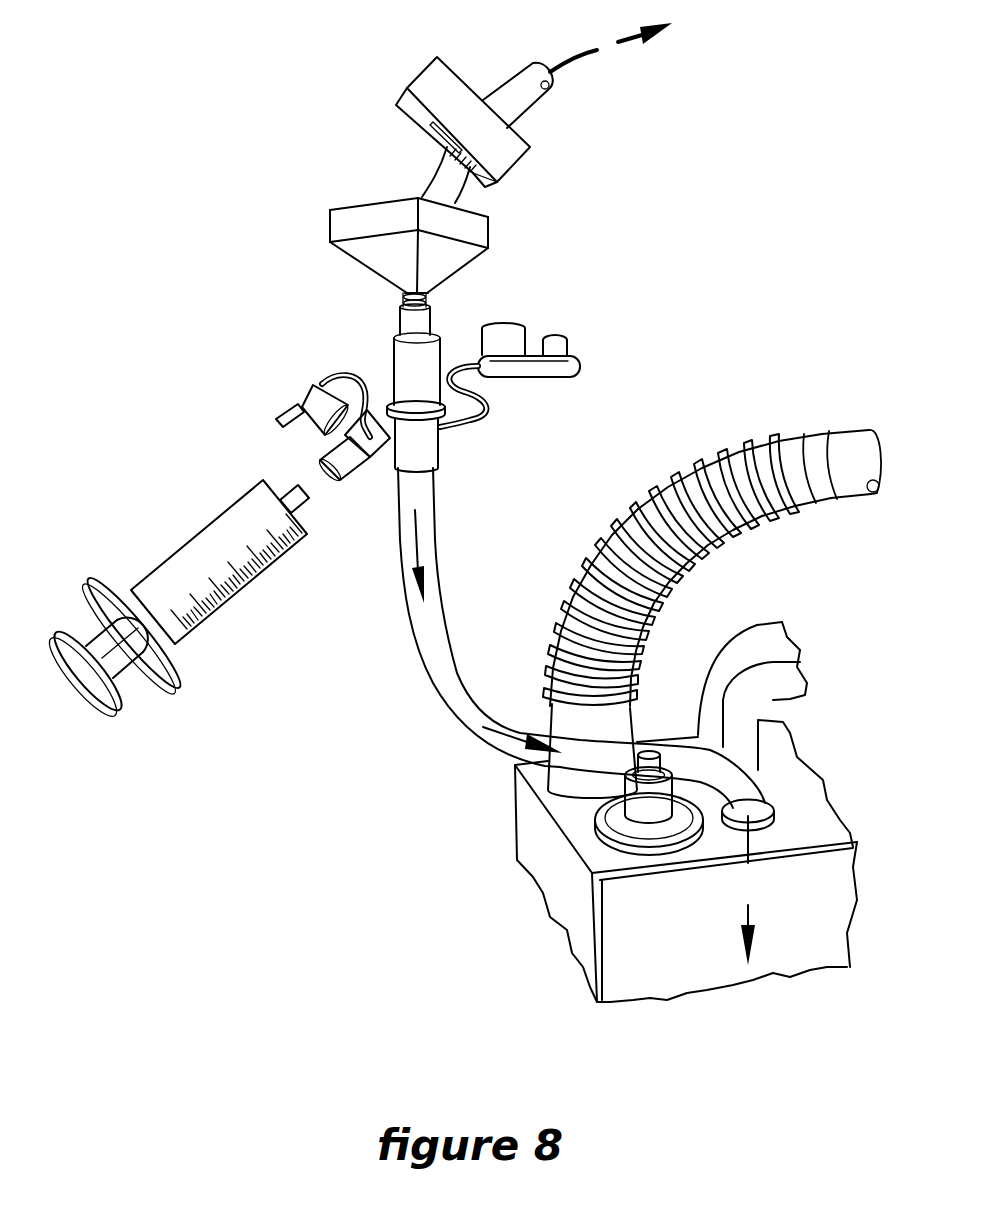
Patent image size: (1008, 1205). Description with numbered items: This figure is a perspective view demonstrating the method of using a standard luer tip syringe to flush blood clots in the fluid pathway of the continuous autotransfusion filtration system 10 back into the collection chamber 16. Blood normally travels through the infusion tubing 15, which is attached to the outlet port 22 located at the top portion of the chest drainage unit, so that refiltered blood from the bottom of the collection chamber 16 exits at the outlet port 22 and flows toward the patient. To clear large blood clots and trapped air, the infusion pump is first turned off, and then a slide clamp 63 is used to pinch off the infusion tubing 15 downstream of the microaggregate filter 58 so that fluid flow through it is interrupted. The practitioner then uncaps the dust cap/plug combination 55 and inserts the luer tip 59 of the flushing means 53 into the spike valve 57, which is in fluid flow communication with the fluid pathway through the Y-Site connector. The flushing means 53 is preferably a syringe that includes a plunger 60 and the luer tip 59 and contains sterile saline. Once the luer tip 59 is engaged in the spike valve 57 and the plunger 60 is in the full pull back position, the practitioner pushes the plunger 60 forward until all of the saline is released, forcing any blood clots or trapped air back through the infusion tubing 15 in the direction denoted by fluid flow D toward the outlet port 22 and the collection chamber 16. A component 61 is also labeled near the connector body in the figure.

The continuous autotransfusion filtration system 10 is at (666, 242).
The infusion tubing 15 is at (457, 702).
The collection chamber 16 is at (620, 933).
The outlet port 22 is at (778, 800).
The flushing means 53 is at (238, 650).
The dust cap/plug combination 55 is at (312, 383).
The spike valve 57 is at (350, 476).
The microaggregate filter 58 is at (488, 233).
The luer tip 59 is at (288, 486).
The plunger 60 is at (130, 683).
The connector body 61 is at (385, 398).
The slide clamp 63 is at (430, 68).